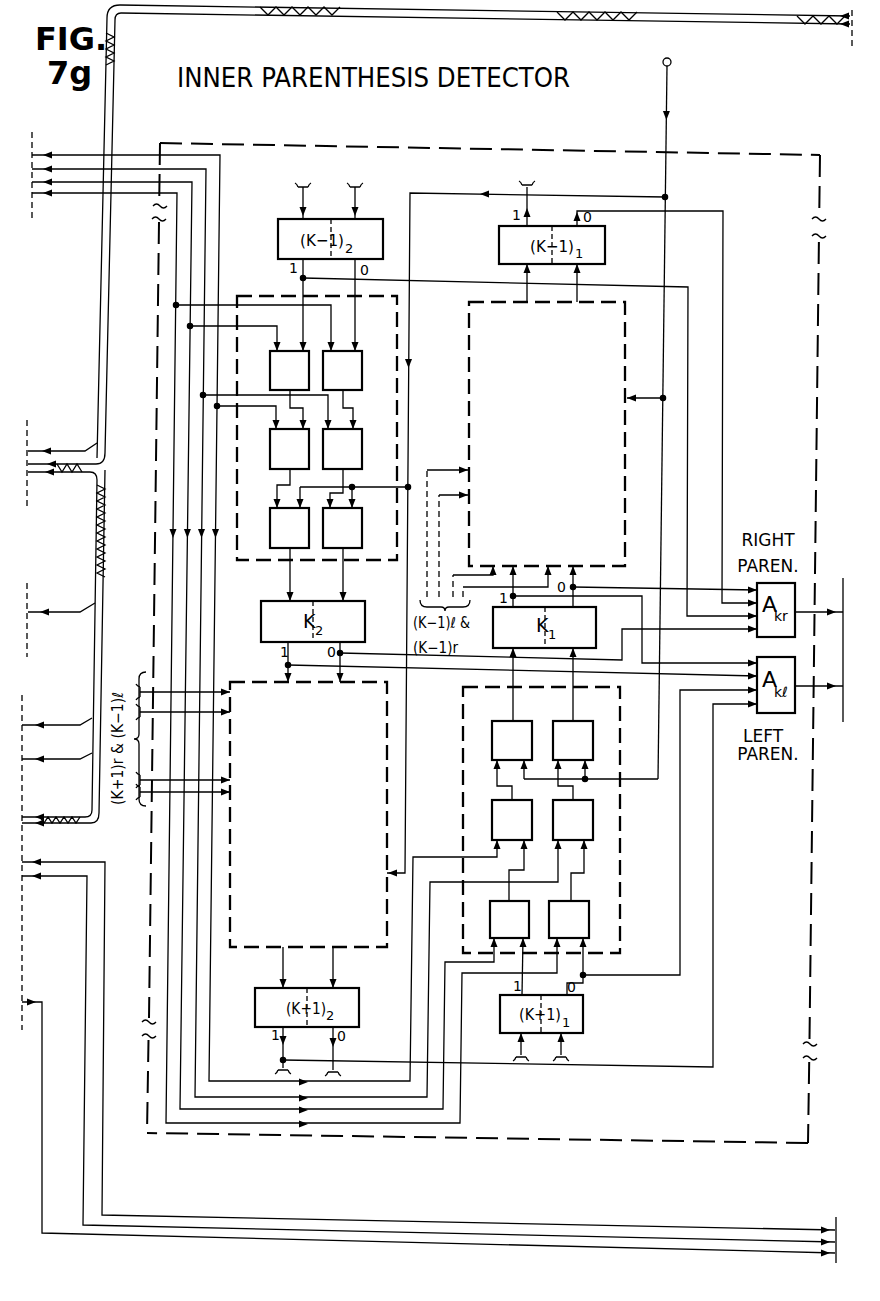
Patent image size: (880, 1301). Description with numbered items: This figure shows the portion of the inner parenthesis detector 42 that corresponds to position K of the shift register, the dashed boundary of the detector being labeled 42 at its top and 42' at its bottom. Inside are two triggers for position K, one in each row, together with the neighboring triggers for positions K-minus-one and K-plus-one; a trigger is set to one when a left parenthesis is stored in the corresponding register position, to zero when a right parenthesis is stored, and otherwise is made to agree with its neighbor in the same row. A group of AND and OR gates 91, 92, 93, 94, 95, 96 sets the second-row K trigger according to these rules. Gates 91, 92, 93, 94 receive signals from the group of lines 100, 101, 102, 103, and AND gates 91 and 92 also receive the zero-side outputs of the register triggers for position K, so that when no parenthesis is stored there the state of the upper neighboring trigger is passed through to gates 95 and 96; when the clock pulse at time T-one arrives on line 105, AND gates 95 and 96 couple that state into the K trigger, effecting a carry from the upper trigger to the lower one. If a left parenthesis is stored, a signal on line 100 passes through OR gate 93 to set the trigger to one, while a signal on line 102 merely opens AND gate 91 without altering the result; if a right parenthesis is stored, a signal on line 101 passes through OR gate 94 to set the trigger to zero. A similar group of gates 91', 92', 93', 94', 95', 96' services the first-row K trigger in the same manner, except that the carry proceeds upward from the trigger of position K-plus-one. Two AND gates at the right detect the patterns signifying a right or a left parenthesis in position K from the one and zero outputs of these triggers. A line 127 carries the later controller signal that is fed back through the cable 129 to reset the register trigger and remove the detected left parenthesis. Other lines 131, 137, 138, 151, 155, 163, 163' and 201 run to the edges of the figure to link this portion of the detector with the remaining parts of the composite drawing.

The inner parenthesis detector 42 is at (484, 632).
The inner parenthesis detector 42' is at (477, 1154).
The AND gate 91 is at (277, 365).
The AND gate 92 is at (357, 362).
The OR gate 93 is at (275, 447).
The OR gate 94 is at (356, 444).
The AND gate 95 is at (275, 520).
The AND gate 96 is at (354, 521).
The AND gate 91' is at (497, 914).
The AND gate 92' is at (582, 907).
The OR gate 93' is at (499, 808).
The OR gate 94' is at (587, 811).
The AND gate 95' is at (501, 729).
The AND gate 96' is at (584, 729).
The line 100 is at (88, 155).
The line 101 is at (146, 169).
The line 102 is at (54, 183).
The line 103 is at (148, 193).
The line 105 is at (668, 100).
The line 127 is at (67, 451).
The cable 129 is at (783, 23).
The line 131 is at (37, 1001).
The line 137 is at (71, 610).
The line 138 is at (67, 724).
The line 151 is at (68, 878).
The line 155 is at (72, 759).
The line 163 is at (56, 811).
The line 163' is at (62, 485).
The line 201 is at (60, 868).